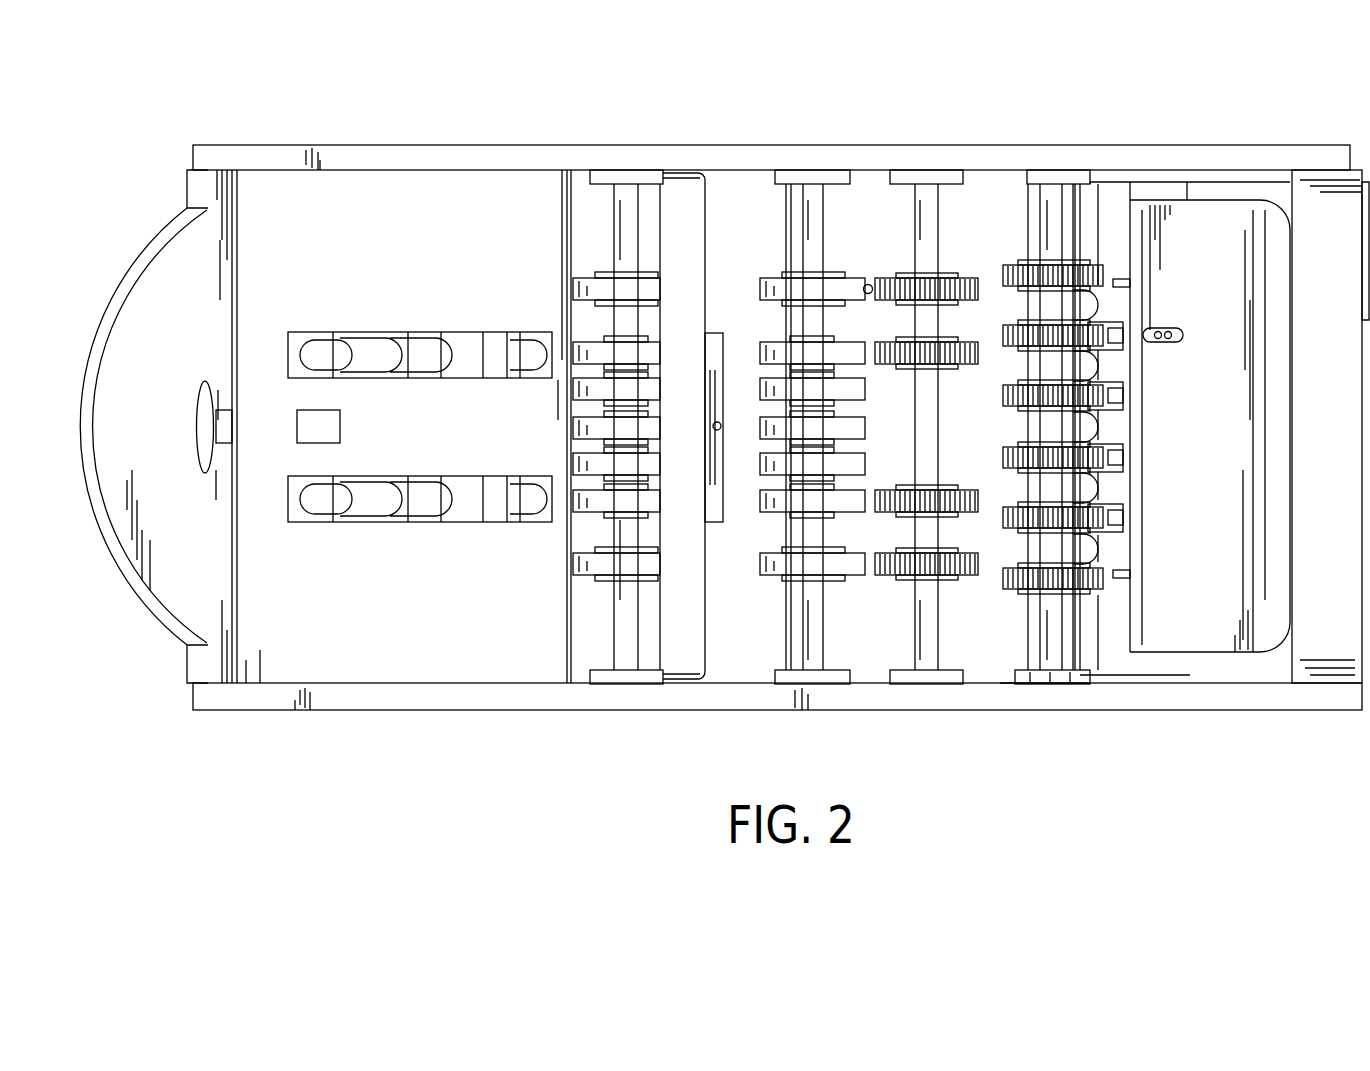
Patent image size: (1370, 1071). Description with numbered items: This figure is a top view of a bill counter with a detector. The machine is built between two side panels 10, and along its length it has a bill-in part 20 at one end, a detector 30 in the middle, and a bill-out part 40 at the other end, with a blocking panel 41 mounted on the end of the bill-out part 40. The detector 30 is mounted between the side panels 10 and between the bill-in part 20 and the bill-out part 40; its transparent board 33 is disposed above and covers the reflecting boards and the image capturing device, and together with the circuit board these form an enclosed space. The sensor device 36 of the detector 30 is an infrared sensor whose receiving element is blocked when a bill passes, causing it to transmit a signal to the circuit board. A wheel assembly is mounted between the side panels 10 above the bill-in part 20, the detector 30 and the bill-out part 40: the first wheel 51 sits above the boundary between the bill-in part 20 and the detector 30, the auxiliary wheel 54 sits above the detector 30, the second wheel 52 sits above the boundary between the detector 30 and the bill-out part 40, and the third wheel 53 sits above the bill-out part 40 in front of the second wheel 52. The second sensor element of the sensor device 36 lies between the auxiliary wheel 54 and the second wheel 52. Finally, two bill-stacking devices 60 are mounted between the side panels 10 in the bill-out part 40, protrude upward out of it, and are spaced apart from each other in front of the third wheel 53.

The side panel 10 is at (778, 427).
The bill-in part 20 is at (1228, 195).
The detector 30 is at (926, 392).
The transparent board 33 is at (995, 205).
The sensor device 36 is at (868, 284).
The bill-out part 40 is at (655, 162).
The blocking panel 41 is at (162, 575).
The first wheel 51 is at (1055, 650).
The second wheel 52 is at (808, 665).
The third wheel 53 is at (630, 660).
The auxiliary wheel 54 is at (925, 665).
The bill-stacking device 60 is at (435, 352).